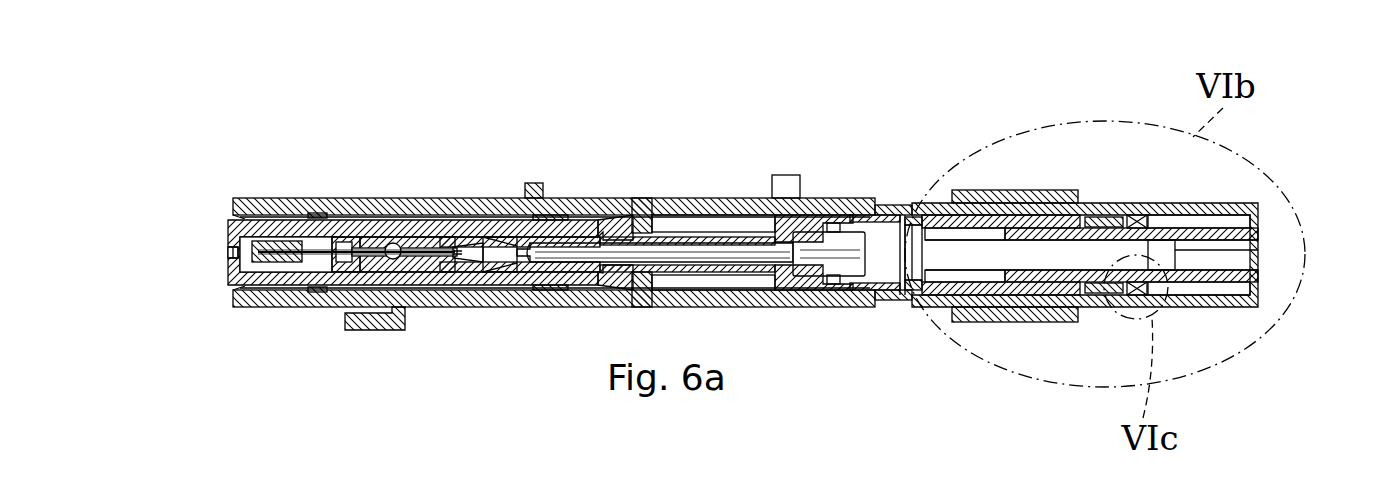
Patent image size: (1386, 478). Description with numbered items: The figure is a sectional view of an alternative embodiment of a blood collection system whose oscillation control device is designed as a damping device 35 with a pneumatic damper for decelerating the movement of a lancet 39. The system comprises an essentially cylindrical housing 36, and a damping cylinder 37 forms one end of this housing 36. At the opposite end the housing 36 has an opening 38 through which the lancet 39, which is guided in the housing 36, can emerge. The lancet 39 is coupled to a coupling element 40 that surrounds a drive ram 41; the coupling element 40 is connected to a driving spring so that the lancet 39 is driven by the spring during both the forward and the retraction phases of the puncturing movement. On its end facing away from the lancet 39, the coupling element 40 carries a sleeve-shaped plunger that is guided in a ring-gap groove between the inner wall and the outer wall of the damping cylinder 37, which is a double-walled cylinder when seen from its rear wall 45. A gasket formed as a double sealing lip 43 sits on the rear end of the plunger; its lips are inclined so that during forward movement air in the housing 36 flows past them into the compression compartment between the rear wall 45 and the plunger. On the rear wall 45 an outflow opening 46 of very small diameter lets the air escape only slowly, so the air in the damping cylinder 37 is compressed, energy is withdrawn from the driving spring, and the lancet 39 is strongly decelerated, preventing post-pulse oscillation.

The damping device 35 is at (928, 186).
The housing 36 is at (502, 199).
The damping cylinder 37 is at (1182, 208).
The opening 38 is at (235, 255).
The lancet 39 is at (375, 253).
The coupling element 40 is at (798, 228).
The drive ram 41 is at (683, 250).
The double sealing lip 43 is at (1138, 284).
The rear wall 45 is at (1237, 288).
The outflow opening 46 is at (1260, 222).